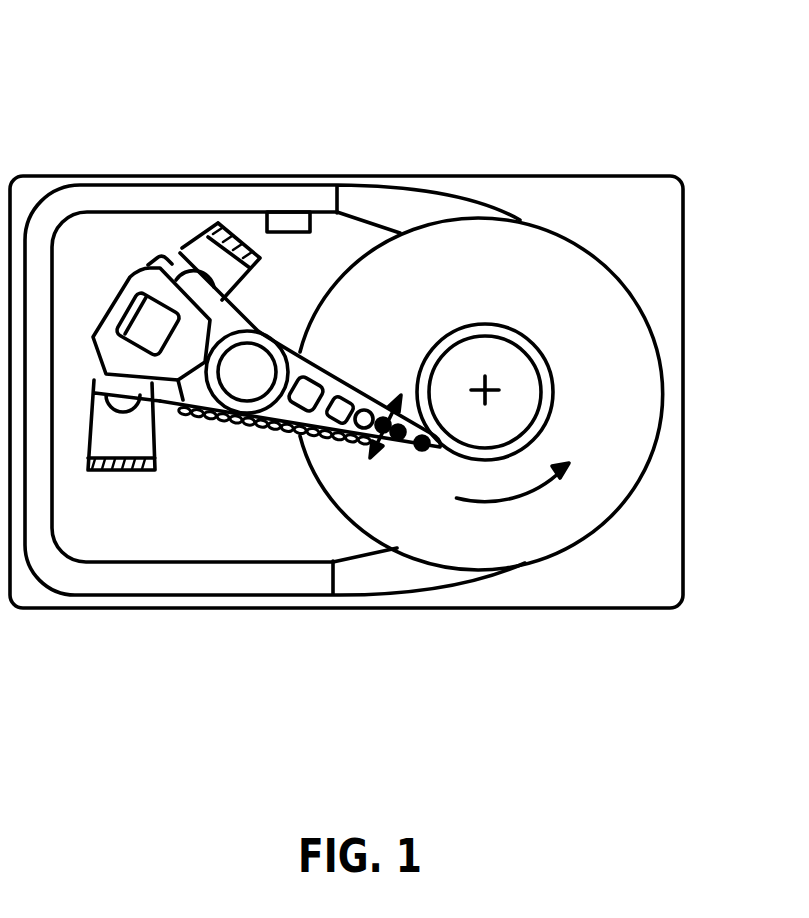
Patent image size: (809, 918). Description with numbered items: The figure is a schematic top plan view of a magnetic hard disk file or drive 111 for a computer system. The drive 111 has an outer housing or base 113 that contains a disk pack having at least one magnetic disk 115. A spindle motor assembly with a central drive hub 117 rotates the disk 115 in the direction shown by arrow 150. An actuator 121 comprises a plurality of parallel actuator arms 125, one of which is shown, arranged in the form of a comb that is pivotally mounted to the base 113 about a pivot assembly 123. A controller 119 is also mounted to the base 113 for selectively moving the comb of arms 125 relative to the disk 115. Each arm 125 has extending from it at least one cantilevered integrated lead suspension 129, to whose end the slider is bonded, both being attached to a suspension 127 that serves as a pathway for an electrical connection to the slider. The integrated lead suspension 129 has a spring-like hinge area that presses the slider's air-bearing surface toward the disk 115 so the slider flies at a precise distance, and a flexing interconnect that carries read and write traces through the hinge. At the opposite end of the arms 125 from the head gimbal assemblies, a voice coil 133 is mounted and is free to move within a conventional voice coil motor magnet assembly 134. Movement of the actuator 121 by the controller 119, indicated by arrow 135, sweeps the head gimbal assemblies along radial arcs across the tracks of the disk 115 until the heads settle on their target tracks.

The magnetic hard disk drive 111 is at (664, 93).
The outer housing or base 113 is at (548, 177).
The magnetic disk 115 is at (583, 246).
The central drive hub 117 is at (515, 332).
The controller 119 is at (292, 233).
The actuator 121 is at (262, 383).
The pivot assembly 123 is at (237, 408).
The actuator arm 125 is at (303, 357).
The suspension 127 is at (340, 378).
The integrated lead suspension 129 is at (422, 449).
The voice coil 133 is at (117, 292).
The voice coil motor magnet assembly 134 is at (203, 248).
The arrow indicating actuator movement 135 is at (372, 450).
The arrow indicating disk rotation 150 is at (498, 504).